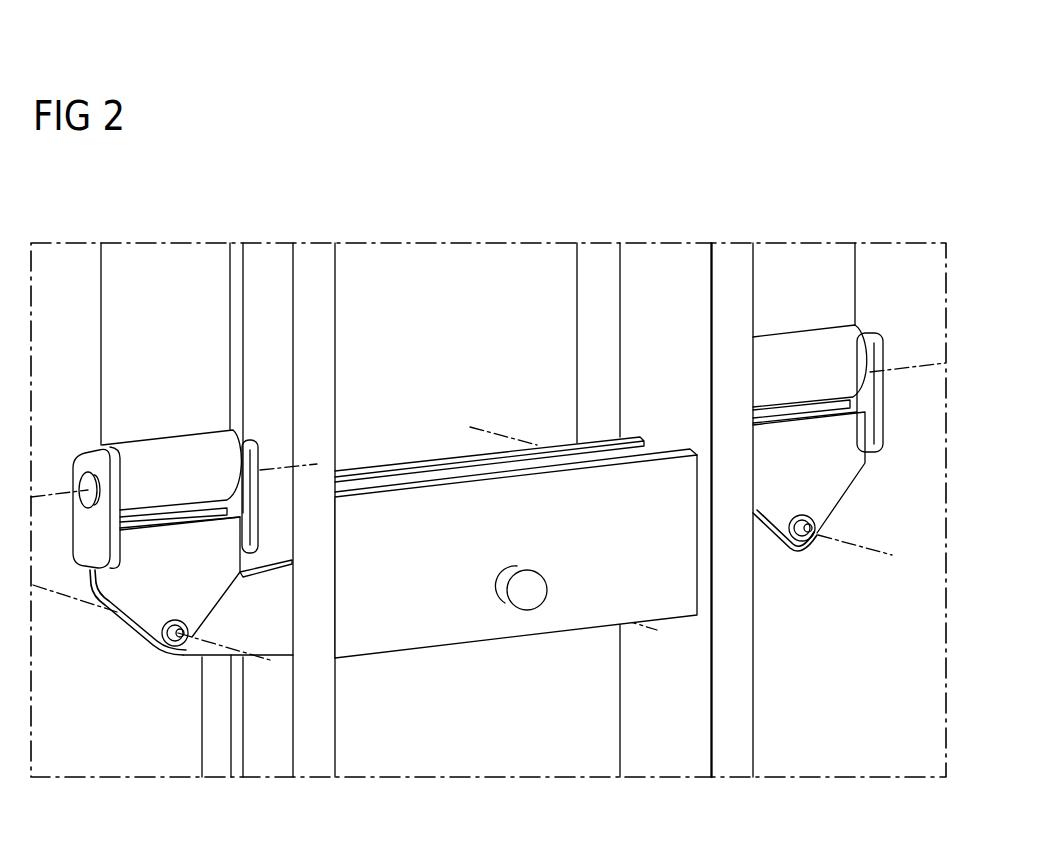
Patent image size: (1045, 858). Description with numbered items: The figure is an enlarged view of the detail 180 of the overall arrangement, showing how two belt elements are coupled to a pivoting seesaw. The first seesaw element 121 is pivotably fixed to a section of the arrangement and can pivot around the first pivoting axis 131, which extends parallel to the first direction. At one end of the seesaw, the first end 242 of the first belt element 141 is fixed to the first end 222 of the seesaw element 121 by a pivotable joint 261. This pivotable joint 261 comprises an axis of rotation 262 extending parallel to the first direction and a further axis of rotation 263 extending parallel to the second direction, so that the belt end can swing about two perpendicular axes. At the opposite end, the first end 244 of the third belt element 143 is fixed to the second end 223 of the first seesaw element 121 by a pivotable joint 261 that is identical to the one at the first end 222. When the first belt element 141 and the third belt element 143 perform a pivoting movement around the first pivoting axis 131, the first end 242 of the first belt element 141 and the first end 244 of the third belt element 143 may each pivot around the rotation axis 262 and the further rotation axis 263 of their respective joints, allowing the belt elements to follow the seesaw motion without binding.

The first seesaw element 121 is at (283, 608).
The first pivoting axis 131 is at (590, 608).
The first belt element 141 is at (88, 240).
The third belt element 143 is at (866, 240).
The detail 180 is at (890, 242).
The first end of the seesaw element 222 is at (192, 652).
The second end of the first seesaw element 223 is at (765, 553).
The first end of the first belt element 242 is at (170, 457).
The first end of the third belt element 244 is at (813, 365).
The pivotable joint 261 is at (130, 600).
The axis of rotation 262 is at (47, 593).
The further axis of rotation 263 is at (302, 462).